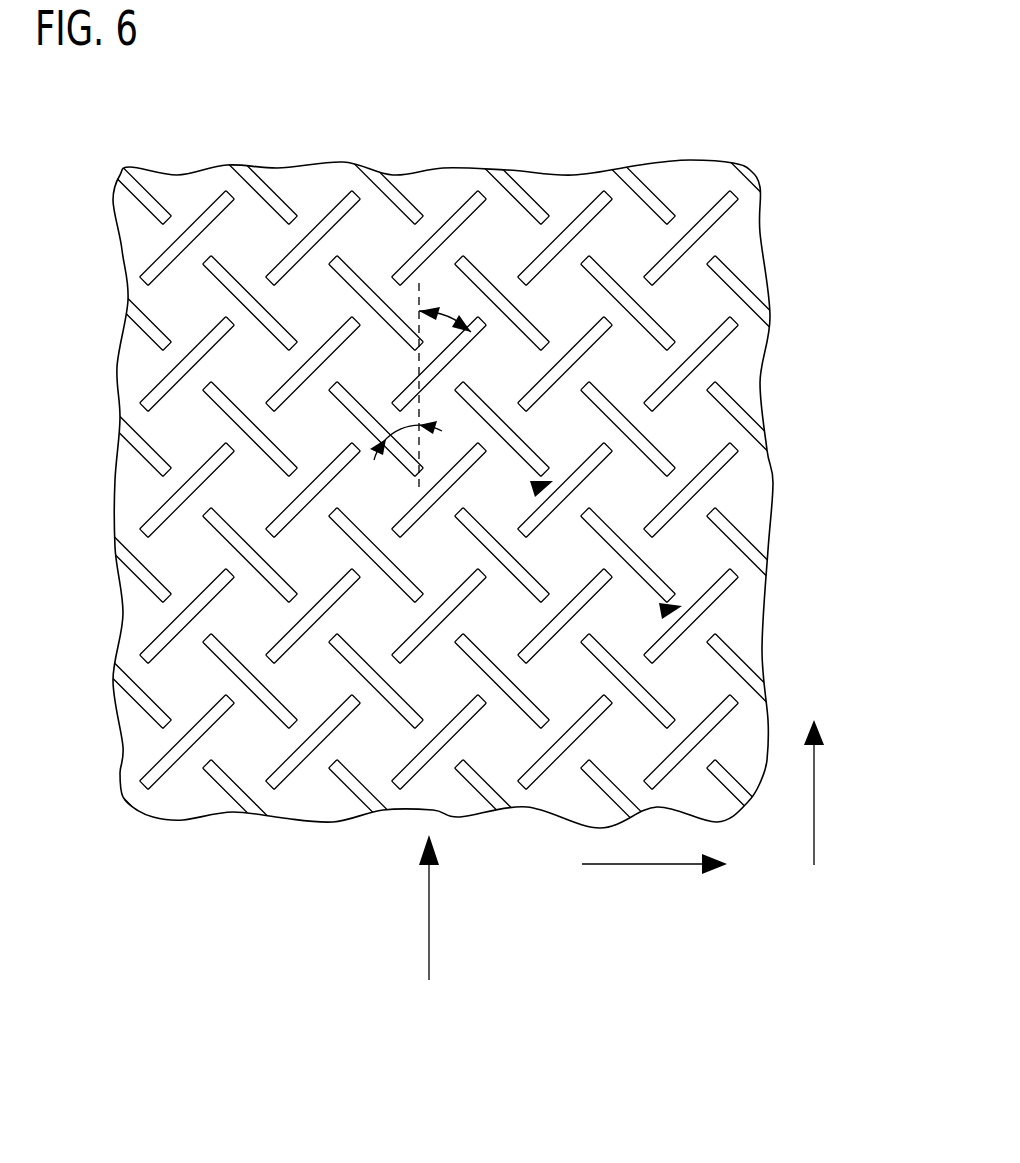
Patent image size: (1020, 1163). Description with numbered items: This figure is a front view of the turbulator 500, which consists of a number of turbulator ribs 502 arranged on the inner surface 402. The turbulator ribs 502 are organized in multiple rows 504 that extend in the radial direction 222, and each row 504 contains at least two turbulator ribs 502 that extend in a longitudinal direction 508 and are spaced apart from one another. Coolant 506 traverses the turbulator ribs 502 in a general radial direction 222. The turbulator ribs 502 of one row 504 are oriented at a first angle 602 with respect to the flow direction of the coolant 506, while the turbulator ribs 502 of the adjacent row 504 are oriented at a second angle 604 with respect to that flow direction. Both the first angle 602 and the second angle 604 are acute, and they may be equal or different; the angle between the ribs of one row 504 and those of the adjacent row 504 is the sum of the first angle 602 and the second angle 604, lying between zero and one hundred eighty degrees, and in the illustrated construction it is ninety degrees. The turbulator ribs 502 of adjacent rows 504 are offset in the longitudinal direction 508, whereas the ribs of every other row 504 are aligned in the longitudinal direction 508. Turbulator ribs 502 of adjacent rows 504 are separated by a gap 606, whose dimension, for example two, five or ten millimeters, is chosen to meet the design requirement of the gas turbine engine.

The turbulator 500 is at (625, 75).
The inner surface 402 is at (142, 612).
The turbulator ribs 502 is at (165, 760).
The rows 504 is at (152, 386).
The coolant 506 is at (429, 917).
The longitudinal direction 508 is at (652, 864).
The radial direction 222 is at (814, 798).
The first angle 602 is at (404, 428).
The second angle 604 is at (446, 316).
The gap 606 is at (532, 489).